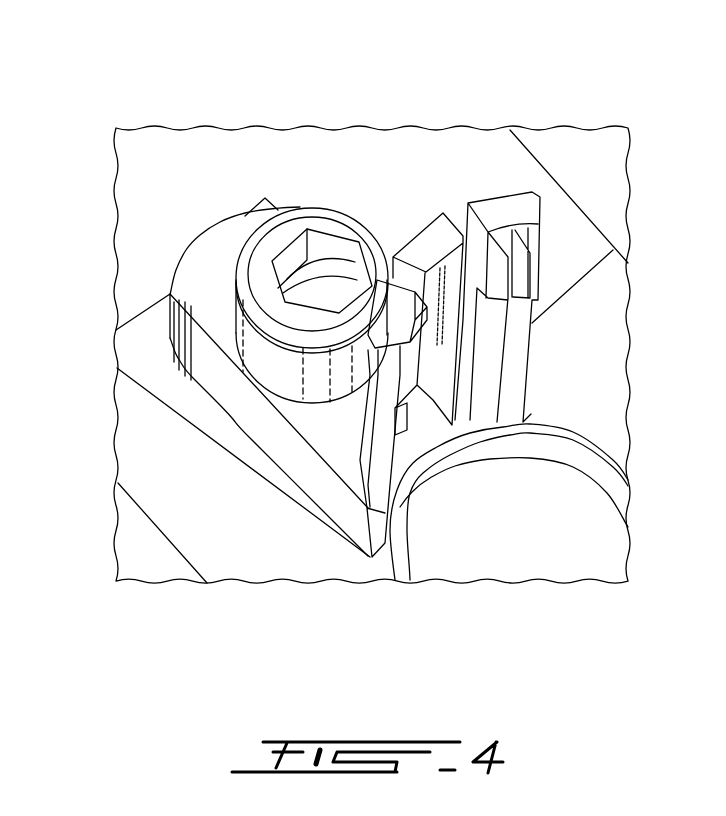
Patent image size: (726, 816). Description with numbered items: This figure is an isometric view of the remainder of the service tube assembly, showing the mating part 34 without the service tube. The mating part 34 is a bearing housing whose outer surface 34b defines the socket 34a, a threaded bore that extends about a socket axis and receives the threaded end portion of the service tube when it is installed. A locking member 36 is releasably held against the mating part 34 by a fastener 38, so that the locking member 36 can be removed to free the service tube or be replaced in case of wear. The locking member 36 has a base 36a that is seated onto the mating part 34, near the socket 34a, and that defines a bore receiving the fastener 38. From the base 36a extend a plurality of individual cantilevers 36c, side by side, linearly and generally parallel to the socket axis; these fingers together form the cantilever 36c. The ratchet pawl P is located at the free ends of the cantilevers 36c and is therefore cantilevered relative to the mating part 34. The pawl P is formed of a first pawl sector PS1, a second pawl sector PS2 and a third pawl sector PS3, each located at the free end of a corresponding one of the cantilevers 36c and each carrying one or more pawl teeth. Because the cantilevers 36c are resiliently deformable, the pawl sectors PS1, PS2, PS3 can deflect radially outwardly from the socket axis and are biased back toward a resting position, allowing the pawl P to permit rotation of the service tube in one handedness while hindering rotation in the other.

The mating part 34 is at (190, 132).
The socket 34a is at (613, 543).
The outer surface 34b is at (613, 452).
The locking member 36 is at (207, 280).
The base 36a is at (195, 277).
The cantilever 36c is at (364, 351).
The fastener 38 is at (308, 218).
The first pawl sector PS1 is at (519, 208).
The second pawl sector PS2 is at (435, 237).
The third pawl sector PS3 is at (227, 418).
The pawl P is at (583, 226).